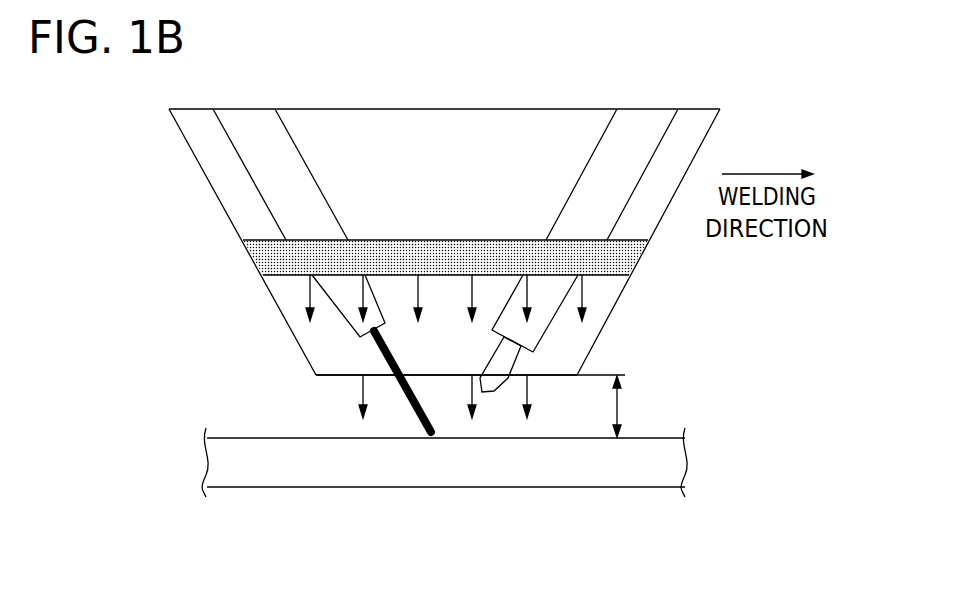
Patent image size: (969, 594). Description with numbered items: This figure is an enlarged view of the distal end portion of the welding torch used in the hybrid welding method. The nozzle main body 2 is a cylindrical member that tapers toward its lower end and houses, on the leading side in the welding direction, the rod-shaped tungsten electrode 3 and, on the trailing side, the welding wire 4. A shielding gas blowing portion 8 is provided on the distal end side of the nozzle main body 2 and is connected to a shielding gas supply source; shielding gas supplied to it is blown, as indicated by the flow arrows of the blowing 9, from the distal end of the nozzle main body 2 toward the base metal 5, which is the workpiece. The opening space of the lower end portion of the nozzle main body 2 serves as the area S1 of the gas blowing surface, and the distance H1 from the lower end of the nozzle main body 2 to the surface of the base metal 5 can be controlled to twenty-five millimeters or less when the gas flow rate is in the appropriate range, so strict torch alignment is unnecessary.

The nozzle main body 2 is at (203, 177).
The tungsten electrode 3 is at (508, 360).
The welding wire 4 is at (382, 355).
The base metal 5 is at (325, 481).
The shielding gas blowing portion 8 is at (628, 253).
The shielding gas blowing 9 is at (533, 388).
The area of gas blowing surface S1 is at (338, 377).
The distance from nozzle lower end to base metal surface H1 is at (634, 406).